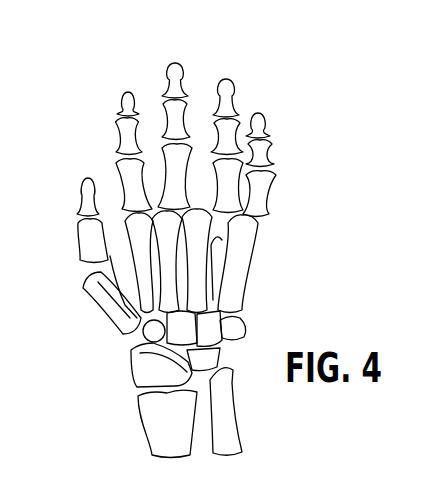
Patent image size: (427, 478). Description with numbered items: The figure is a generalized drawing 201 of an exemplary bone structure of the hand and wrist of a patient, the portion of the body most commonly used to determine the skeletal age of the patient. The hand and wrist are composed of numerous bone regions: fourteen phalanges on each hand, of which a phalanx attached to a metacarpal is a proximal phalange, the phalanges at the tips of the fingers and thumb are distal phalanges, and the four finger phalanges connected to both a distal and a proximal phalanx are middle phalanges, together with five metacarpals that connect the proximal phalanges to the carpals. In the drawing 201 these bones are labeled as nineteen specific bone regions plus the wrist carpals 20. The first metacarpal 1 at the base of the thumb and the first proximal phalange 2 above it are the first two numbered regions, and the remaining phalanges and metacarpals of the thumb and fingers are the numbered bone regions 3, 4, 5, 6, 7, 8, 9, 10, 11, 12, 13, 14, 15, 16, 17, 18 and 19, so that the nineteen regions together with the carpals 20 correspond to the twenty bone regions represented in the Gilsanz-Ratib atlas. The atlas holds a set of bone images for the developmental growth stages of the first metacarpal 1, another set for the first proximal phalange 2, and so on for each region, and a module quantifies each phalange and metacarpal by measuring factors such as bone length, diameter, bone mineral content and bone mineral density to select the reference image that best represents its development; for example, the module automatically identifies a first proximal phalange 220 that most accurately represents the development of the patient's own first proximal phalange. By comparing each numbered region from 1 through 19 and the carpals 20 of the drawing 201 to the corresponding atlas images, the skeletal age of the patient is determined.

The first metacarpal 1 is at (102, 290).
The first proximal phalange 2 is at (78, 266).
The first proximal phalange 220 is at (78, 235).
The bone region 3 is at (76, 192).
The bone region 4 is at (133, 253).
The bone region 5 is at (126, 183).
The bone region 6 is at (119, 135).
The bone region 7 is at (123, 94).
The bone region 8 is at (164, 208).
The bone region 9 is at (167, 149).
The bone region 10 is at (164, 146).
The bone region 11 is at (167, 63).
The bone region 12 is at (212, 207).
The bone region 13 is at (214, 160).
The bone region 14 is at (213, 120).
The bone region 15 is at (233, 79).
The bone region 16 is at (250, 262).
The bone region 17 is at (268, 204).
The bone region 18 is at (273, 148).
The bone region 19 is at (265, 120).
The wrist carpals 20 is at (240, 357).
The drawing 201 is at (297, 76).